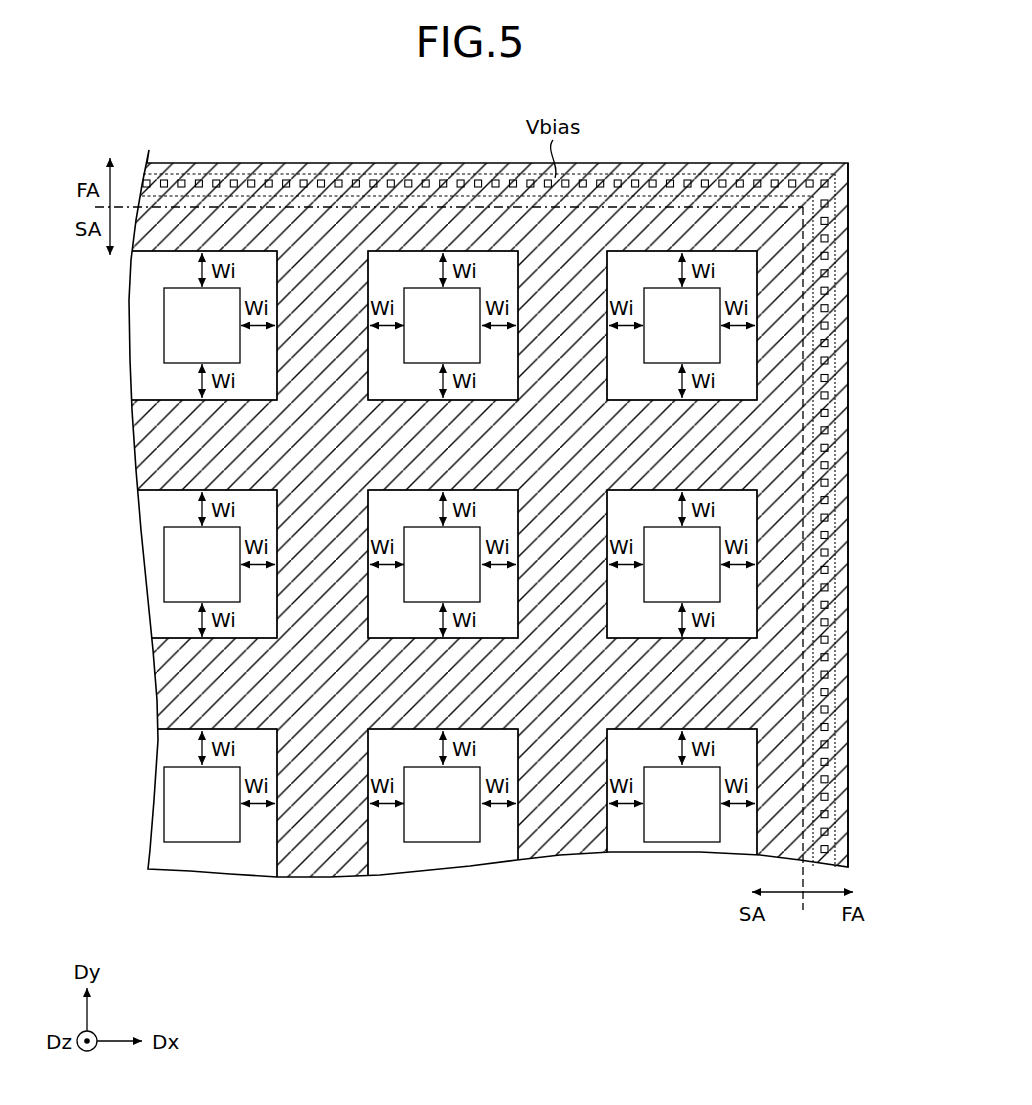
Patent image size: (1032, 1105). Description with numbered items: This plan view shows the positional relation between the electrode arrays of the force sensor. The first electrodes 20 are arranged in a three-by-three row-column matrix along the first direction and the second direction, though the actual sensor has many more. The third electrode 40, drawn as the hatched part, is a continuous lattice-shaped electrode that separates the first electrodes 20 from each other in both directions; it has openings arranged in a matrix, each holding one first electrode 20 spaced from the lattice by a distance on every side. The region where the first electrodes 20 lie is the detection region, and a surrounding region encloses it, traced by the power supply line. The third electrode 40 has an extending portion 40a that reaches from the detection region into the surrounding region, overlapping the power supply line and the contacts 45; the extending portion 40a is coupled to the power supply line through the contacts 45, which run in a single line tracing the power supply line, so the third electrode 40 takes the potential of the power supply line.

The first electrode 20 is at (180, 323).
The third electrode 40 is at (180, 443).
The contact 45 is at (754, 190).
The extending portion 40a is at (818, 168).